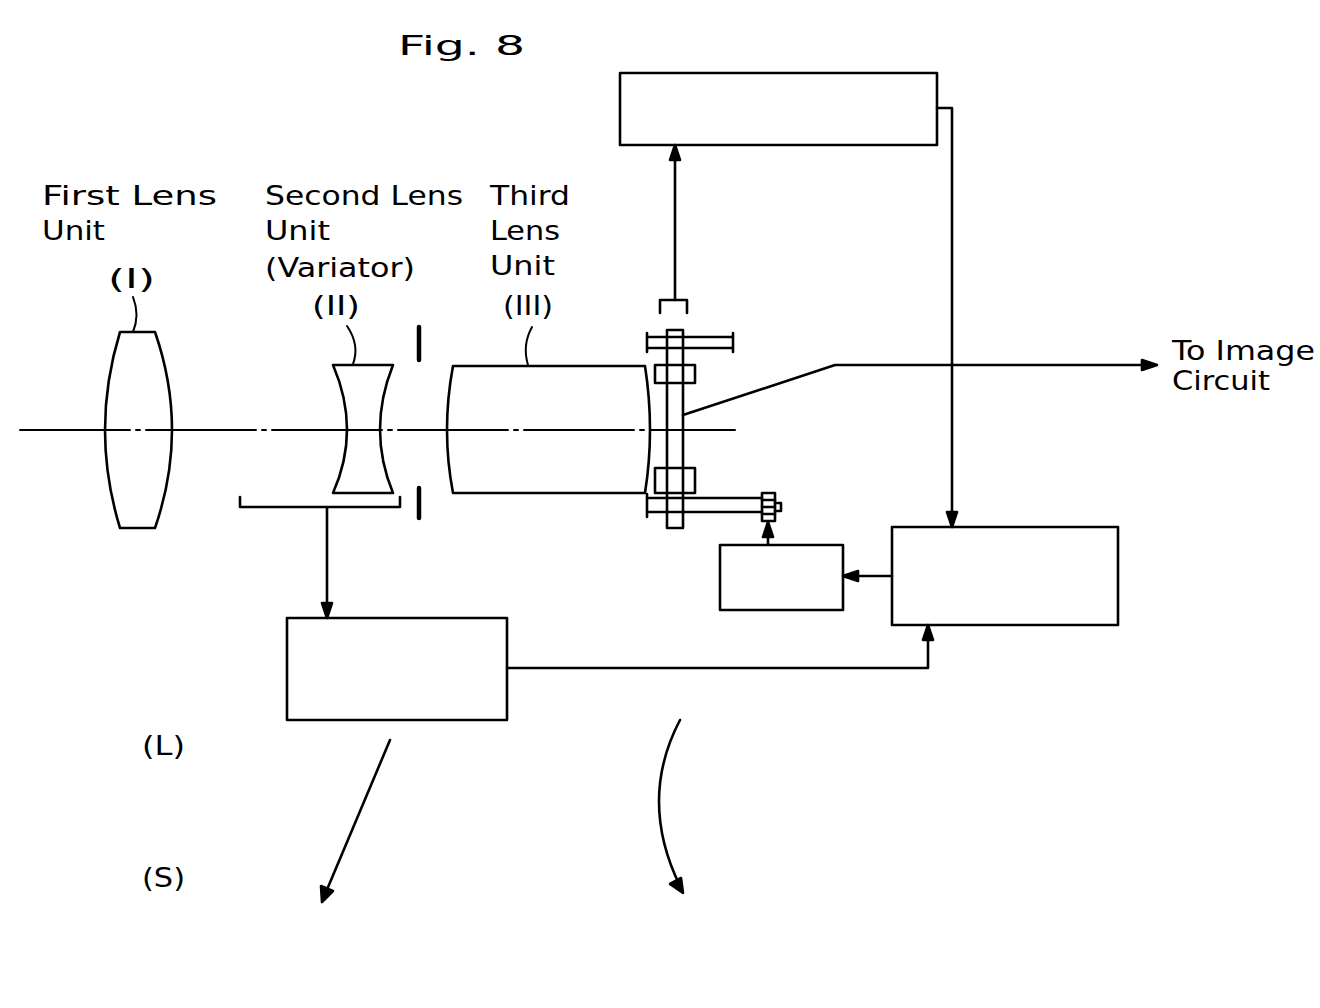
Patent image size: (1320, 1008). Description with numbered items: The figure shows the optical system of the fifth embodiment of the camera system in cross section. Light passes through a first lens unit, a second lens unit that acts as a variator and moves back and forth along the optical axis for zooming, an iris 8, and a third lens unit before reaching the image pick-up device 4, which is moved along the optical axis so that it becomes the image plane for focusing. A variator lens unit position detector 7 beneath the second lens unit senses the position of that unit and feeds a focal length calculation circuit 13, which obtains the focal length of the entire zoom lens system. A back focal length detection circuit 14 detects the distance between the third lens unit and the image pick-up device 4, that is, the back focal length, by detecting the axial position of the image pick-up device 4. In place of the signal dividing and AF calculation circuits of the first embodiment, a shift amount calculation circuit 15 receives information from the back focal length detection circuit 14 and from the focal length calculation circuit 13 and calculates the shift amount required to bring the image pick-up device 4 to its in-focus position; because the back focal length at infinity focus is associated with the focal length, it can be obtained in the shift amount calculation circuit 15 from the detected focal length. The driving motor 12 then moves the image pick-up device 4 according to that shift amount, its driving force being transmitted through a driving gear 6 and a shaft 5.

The image pick-up device 4 is at (685, 400).
The shaft 5 is at (720, 514).
The driving gear 6 is at (762, 493).
The variator lens unit position detector 7 is at (263, 510).
The iris 8 is at (421, 508).
The driving motor 12 is at (812, 545).
The focal length calculation circuit 13 is at (350, 721).
The back focal length detection circuit 14 is at (813, 73).
The shift amount calculation circuit 15 is at (1118, 561).